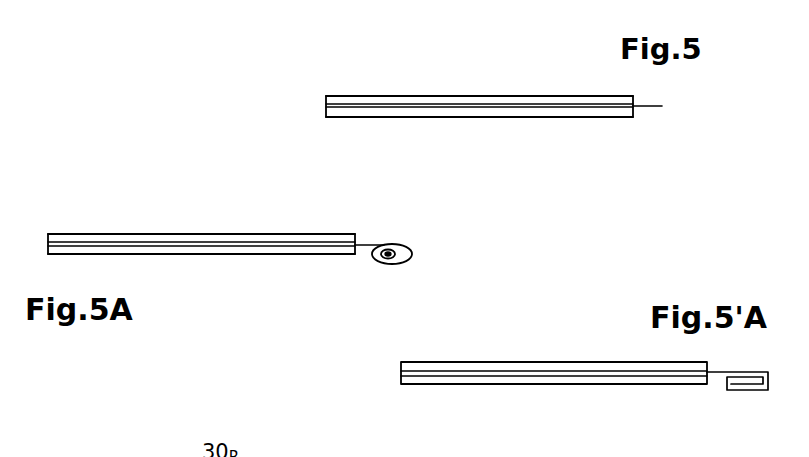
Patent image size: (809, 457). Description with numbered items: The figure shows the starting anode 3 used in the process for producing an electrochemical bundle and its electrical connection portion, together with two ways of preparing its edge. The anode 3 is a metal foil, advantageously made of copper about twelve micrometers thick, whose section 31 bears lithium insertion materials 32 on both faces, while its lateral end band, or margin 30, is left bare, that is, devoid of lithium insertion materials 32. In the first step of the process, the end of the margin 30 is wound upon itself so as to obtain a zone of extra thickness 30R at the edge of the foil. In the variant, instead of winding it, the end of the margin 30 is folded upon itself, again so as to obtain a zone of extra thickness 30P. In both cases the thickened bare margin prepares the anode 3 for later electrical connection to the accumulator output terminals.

In FIG. 5, the anode 3 is at (297, 103).
In FIG. 5A, the anode 3 is at (88, 206).
In FIG. 5, the lateral end band (margin) 30 is at (645, 108).
In FIG. 5A, the lateral end band (margin) 30 is at (376, 241).
In FIG. 5A, the zone of extra thickness 30R is at (394, 265).
In FIG. 5'A, the zone of extra thickness 30P is at (742, 392).
In FIG. 5, the section 31 is at (428, 106).
In FIG. 5A, the section 31 is at (287, 254).
In FIG. 5'A, the section 31 is at (485, 377).
In FIG. 5, the lithium insertion materials 32 is at (380, 96).
In FIG. 5A, the lithium insertion materials 32 is at (165, 234).
In FIG. 5'A, the lithium insertion materials 32 is at (546, 362).